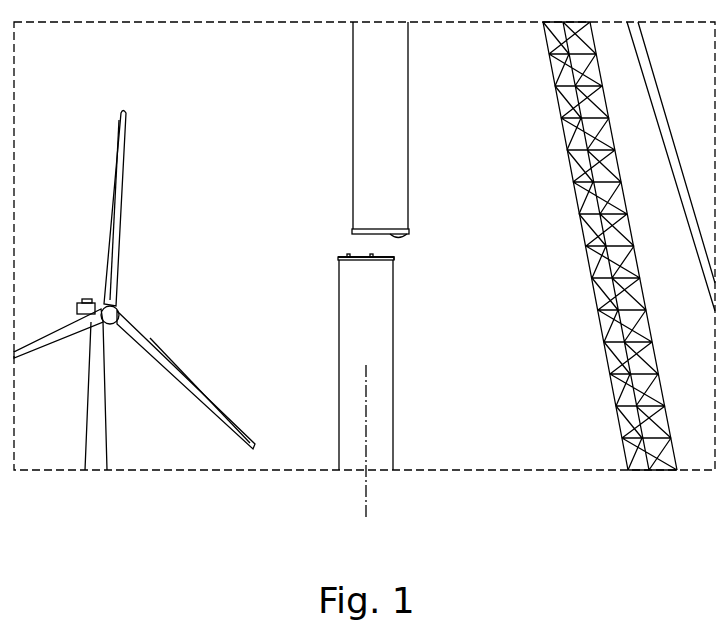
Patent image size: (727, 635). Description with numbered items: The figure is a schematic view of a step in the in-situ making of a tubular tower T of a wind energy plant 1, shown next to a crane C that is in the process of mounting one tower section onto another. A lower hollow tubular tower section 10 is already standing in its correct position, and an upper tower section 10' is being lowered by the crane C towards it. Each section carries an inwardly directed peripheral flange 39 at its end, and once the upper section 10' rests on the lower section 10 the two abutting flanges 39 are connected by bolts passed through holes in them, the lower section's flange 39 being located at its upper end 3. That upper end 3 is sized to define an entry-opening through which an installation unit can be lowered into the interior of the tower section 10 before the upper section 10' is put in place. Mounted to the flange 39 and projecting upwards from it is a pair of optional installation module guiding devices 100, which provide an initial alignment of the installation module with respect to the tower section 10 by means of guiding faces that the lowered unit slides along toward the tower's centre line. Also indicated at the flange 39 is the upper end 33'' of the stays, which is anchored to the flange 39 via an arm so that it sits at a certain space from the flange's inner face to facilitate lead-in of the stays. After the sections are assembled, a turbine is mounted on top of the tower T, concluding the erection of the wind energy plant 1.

The wind energy plant 1 is at (134, 291).
The tubular tower T is at (105, 410).
The lower tower section 10 is at (343, 387).
The upper tower section 10' is at (420, 125).
The installation module guiding device 100 is at (347, 255).
The upper end of the stays 33'' is at (335, 226).
The upper end 3 is at (339, 258).
The inwardly directed peripheral flange 39 is at (410, 232).
The crane C is at (553, 97).